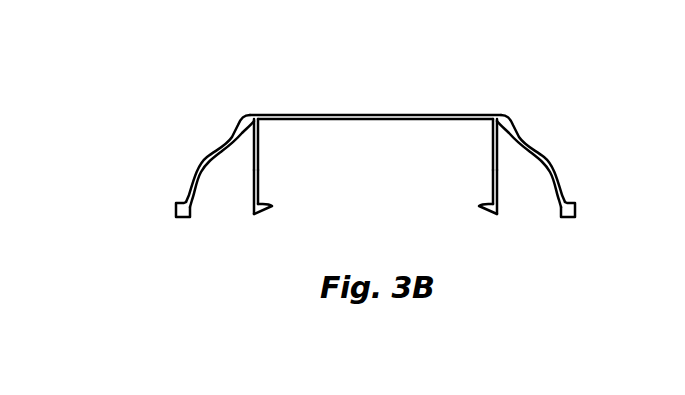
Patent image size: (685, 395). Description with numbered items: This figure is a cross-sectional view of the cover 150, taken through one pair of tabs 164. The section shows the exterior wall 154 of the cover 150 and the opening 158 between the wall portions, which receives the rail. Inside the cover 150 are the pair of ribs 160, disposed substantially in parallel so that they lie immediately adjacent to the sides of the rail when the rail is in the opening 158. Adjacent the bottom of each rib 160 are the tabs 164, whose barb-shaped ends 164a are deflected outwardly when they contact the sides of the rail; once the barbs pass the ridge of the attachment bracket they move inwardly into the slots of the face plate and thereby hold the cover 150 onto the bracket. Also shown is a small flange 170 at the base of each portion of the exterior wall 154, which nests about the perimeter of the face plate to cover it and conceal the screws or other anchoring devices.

The cover 150 is at (228, 78).
The exterior wall 154 is at (215, 146).
The opening 158 is at (348, 114).
The rib 160 is at (260, 165).
The tab 164 is at (262, 188).
The barb-shaped end 164a is at (270, 207).
The flange 170 is at (174, 206).